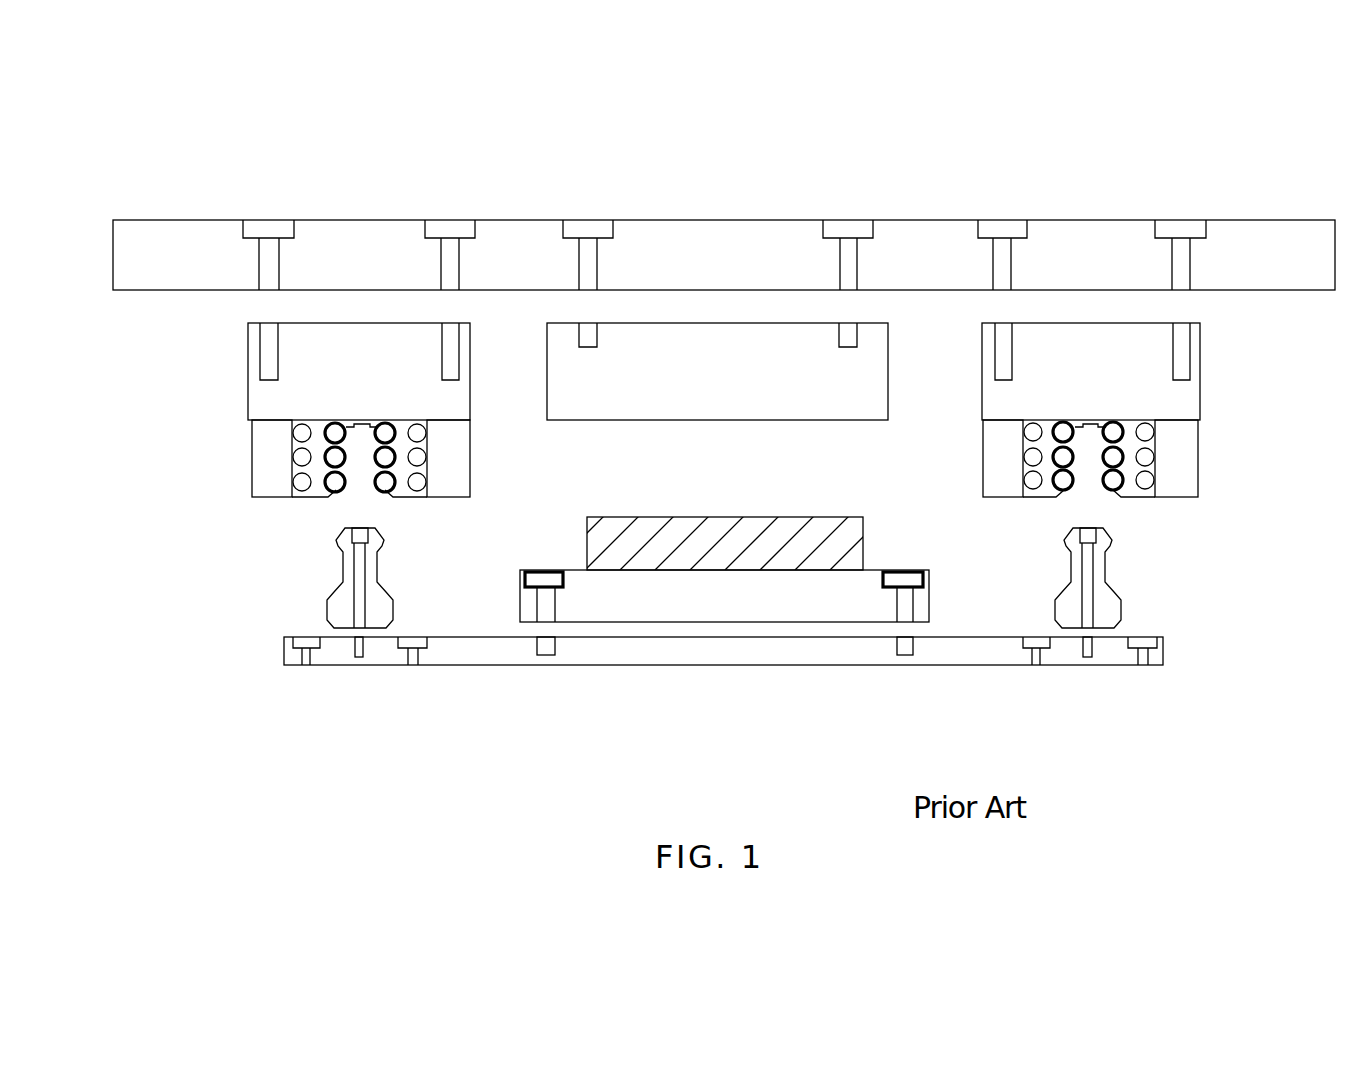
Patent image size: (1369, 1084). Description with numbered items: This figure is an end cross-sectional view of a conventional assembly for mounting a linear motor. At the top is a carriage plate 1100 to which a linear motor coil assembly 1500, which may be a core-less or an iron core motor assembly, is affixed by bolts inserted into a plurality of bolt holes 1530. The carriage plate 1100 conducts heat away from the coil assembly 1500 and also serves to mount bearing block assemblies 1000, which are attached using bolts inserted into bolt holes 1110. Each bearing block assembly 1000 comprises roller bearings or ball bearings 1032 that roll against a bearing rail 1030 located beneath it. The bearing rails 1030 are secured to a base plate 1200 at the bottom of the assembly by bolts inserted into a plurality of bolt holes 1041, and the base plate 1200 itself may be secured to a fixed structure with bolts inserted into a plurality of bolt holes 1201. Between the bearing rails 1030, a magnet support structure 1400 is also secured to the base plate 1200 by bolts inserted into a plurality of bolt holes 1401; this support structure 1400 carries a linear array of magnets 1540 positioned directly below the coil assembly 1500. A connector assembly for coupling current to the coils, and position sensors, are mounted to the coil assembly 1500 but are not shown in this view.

The bearing block assembly 1000 is at (715, 410).
The bearing rail 1030 is at (722, 578).
The roller bearings or ball bearings 1032 is at (784, 488).
The bolt holes 1041 is at (724, 585).
The carriage plate 1100 is at (724, 205).
The bolt holes 1110 is at (680, 215).
The base plate 1200 is at (723, 693).
The bolt holes 1201 is at (725, 683).
The magnet support structure 1400 is at (724, 652).
The bolt holes 1401 is at (913, 473).
The linear motor coil assembly 1500 is at (717, 401).
The bolt holes 1530 is at (888, 220).
The linear array of magnets 1540 is at (737, 517).